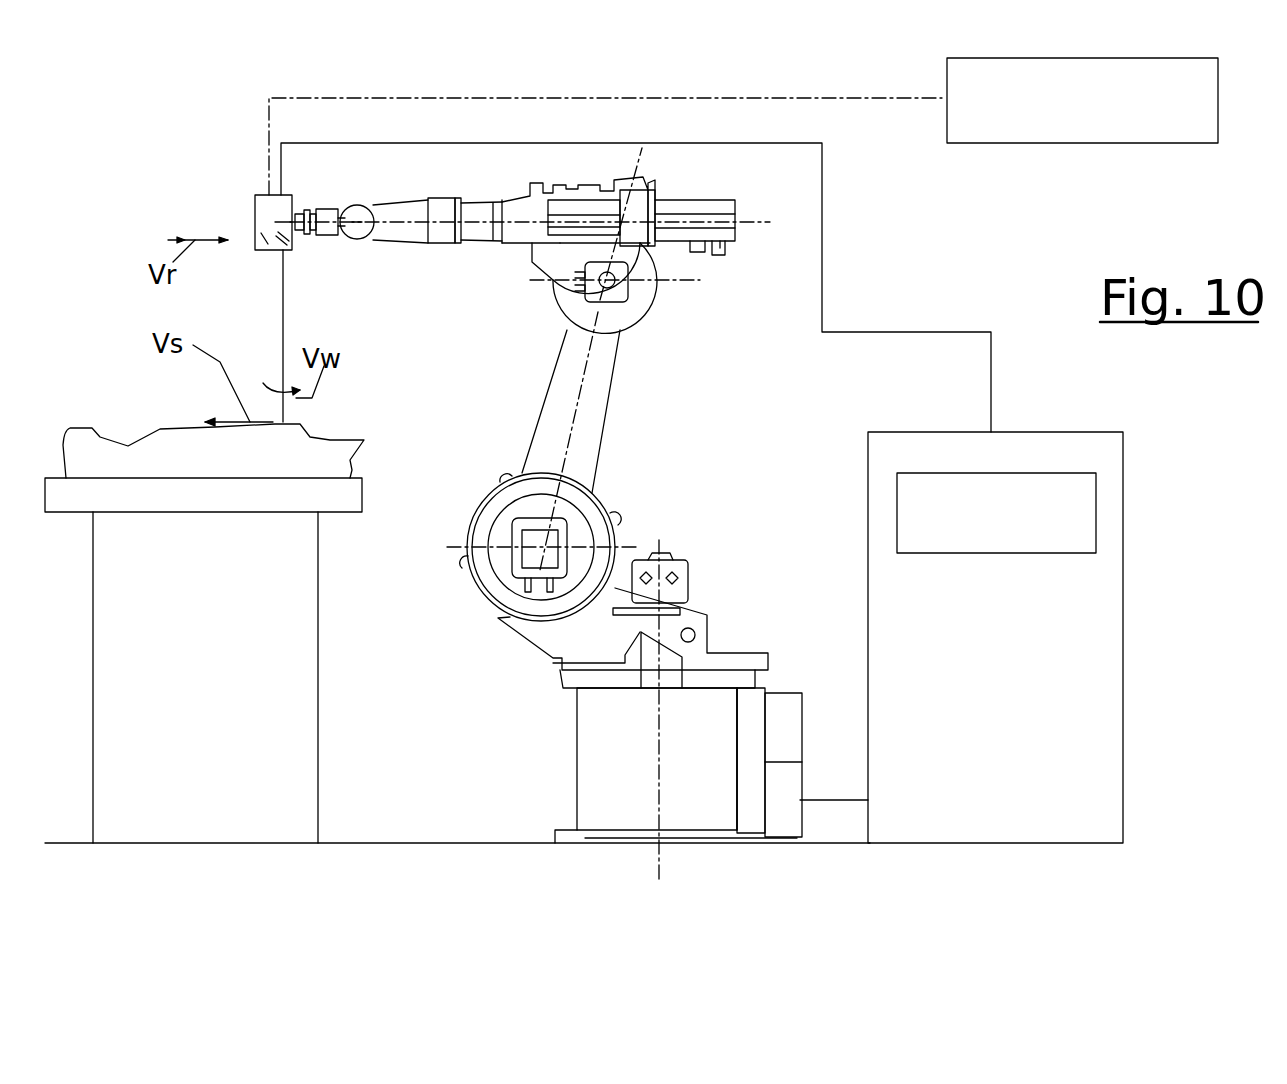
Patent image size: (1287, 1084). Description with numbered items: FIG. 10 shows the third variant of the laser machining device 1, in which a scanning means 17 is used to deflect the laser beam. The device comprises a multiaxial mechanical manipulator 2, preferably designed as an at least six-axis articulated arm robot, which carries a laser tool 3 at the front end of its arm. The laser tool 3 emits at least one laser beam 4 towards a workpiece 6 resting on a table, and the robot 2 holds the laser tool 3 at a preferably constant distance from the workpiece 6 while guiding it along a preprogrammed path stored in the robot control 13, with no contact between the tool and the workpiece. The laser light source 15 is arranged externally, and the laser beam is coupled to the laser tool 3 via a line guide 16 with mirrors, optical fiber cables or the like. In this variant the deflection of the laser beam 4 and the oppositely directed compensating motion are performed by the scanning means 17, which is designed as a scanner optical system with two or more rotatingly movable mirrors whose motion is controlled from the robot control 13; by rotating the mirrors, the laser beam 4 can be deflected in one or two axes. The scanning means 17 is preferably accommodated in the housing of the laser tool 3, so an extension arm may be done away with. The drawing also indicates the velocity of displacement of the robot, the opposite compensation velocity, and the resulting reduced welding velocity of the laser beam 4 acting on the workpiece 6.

The laser machining device 1 is at (240, 160).
The multiaxial mechanical manipulator 2 is at (650, 422).
The laser tool 3 is at (272, 212).
The laser beam 4 is at (280, 340).
The workpiece 6 is at (315, 468).
The robot control 13 is at (1105, 746).
The laser light source 15 is at (1160, 118).
The line guide 16 is at (905, 100).
The scanning means 17 is at (288, 248).